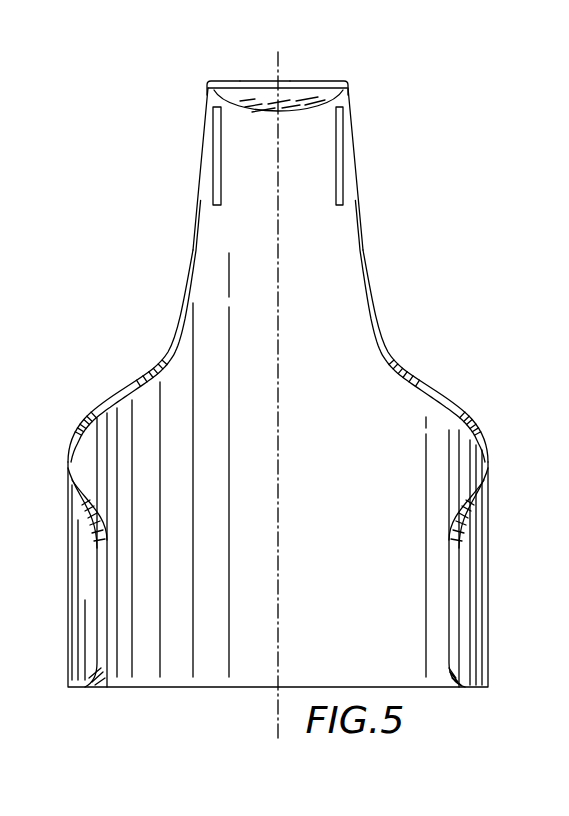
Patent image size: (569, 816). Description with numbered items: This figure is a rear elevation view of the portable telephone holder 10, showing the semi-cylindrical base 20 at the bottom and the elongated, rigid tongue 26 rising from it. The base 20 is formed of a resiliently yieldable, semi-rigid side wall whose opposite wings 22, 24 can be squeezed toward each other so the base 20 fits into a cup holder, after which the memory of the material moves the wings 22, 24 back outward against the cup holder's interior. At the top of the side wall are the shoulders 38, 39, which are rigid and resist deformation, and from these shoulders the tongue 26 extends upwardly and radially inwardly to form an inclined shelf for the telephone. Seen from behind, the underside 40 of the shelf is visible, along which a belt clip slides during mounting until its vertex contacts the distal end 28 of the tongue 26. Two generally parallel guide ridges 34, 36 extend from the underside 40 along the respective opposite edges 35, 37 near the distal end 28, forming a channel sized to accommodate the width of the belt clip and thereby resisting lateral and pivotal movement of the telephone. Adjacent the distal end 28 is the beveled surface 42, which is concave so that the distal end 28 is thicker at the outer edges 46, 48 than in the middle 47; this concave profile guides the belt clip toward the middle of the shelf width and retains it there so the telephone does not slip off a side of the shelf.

The portable telephone holder 10 is at (127, 102).
The base 20 is at (477, 422).
The wing 22 is at (490, 582).
The wing 24 is at (68, 614).
The tongue 26 is at (367, 253).
The distal end 28 is at (310, 80).
The guide ridge 34 is at (338, 128).
The edge 35 is at (353, 148).
The guide ridge 36 is at (217, 177).
The edge 37 is at (202, 193).
The shoulder 38 is at (395, 350).
The shoulder 39 is at (165, 343).
The underside of shelf 40 is at (260, 221).
The beveled surface 42 is at (344, 103).
The outer edge 46 is at (348, 89).
The middle 47 is at (268, 80).
The outer edge 48 is at (210, 85).